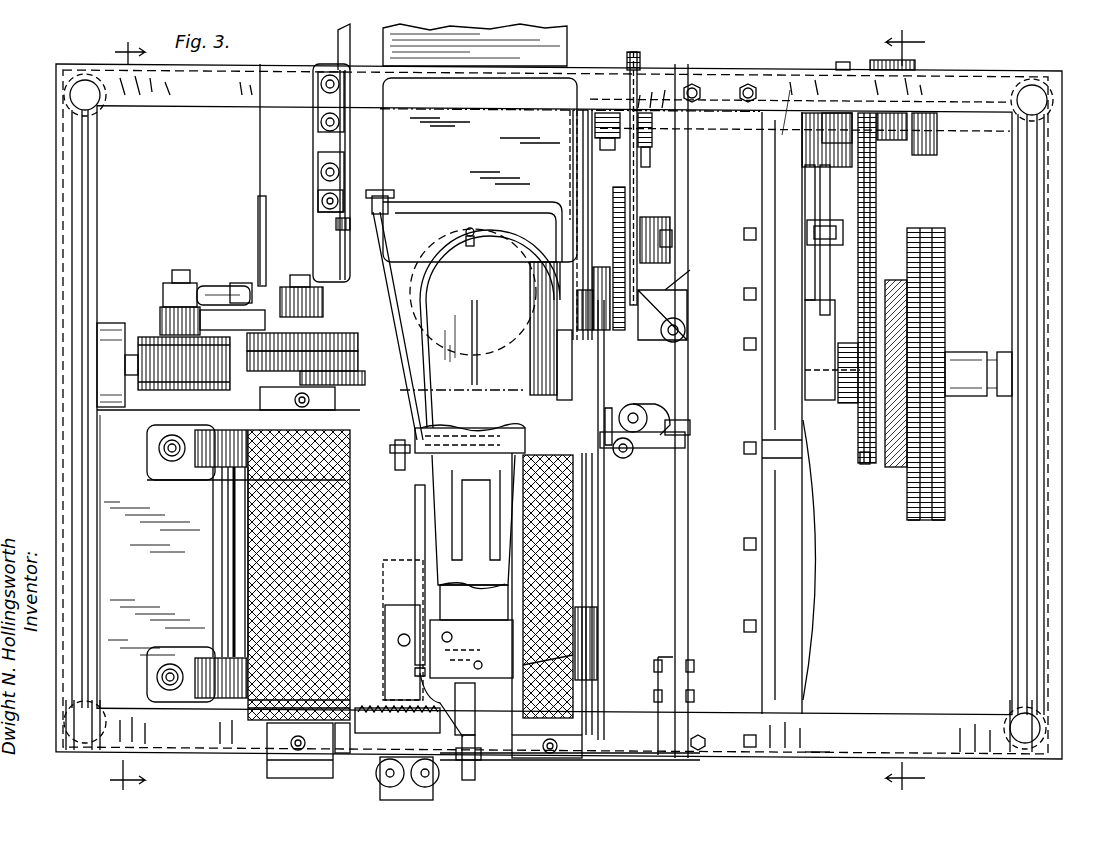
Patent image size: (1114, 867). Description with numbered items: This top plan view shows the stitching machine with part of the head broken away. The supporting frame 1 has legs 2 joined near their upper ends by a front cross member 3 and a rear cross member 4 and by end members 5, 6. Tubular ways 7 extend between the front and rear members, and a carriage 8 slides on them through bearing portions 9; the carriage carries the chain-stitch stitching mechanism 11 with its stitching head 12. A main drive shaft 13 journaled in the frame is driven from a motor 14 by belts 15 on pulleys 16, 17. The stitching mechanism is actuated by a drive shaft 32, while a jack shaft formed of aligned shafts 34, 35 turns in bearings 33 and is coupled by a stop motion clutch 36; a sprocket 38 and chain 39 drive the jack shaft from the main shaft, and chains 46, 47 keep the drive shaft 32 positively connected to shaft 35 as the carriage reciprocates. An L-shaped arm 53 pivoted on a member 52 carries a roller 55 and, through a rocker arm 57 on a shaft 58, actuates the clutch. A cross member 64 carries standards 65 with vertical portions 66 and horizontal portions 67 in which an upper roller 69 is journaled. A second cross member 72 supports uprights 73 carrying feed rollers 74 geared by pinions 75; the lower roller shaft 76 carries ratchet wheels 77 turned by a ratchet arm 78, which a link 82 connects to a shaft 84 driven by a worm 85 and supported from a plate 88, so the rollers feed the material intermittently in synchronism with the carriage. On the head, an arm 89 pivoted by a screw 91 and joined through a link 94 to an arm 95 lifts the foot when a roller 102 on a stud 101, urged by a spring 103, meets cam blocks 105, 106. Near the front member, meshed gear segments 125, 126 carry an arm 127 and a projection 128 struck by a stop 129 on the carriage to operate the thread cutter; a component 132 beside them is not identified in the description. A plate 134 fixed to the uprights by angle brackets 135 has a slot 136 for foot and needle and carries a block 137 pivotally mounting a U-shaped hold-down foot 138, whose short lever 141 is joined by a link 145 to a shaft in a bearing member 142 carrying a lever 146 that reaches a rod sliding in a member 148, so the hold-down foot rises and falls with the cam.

The supporting frame 1 is at (1072, 290).
The legs 2 is at (62, 92).
The front cross member 3 is at (822, 752).
The rear cross member 4 is at (792, 78).
The end member 5 is at (40, 370).
The end member 6 is at (1074, 418).
The tubular ways 7 is at (578, 693).
The carriage 8 is at (500, 758).
The bearing portions 9 is at (218, 620).
The stitching mechanism 11 is at (470, 228).
The stitching head 12 is at (505, 640).
The main drive shaft 13 is at (826, 395).
The motor 14 is at (860, 335).
The belts 15 is at (935, 520).
The pulley 16 is at (945, 268).
The pulley 17 is at (948, 290).
The drive shaft 32 is at (668, 290).
The bearings 33 is at (938, 147).
The shaft 34 is at (893, 140).
The shaft 35 is at (640, 110).
The stop motion mechanism clutch 36 is at (842, 62).
The sprocket 38 is at (865, 462).
The chain 39 is at (878, 183).
The chain 46 is at (637, 180).
The chain 47 is at (613, 190).
The member 52 is at (665, 262).
The L-shaped arm 53 is at (660, 318).
The roller 55 is at (686, 328).
The rocker arm 57 is at (822, 220).
The shaft 58 is at (808, 157).
The cross member 64 is at (762, 630).
The standards 65 is at (578, 460).
The vertical portions 66 is at (590, 478).
The horizontal portions 67 is at (660, 448).
The upper roller 69 is at (594, 530).
The cross member 72 is at (268, 222).
The uprights 73 is at (330, 388).
The feed rollers 74 is at (260, 574).
The pinions 75 is at (350, 355).
The shaft 76 is at (298, 286).
The ratchet wheels 77 is at (350, 335).
The ratchet arm 78 is at (172, 310).
The link 82 is at (215, 287).
The shaft 84 is at (212, 505).
The worm 85 is at (184, 377).
The plate 88 is at (110, 507).
The arm 89 is at (395, 275).
The screw 91 is at (414, 503).
The link 94 is at (402, 636).
The arm 95 is at (398, 642).
The stud 101 is at (380, 225).
The roller 102 is at (318, 182).
The spring 103 is at (385, 200).
The cam block 105 is at (330, 36).
The cam block 106 is at (340, 226).
The gear segment 125 is at (345, 760).
The gear segment 126 is at (432, 790).
The arm 127 is at (250, 713).
The projection 128 is at (473, 730).
The stop 129 is at (560, 660).
The pin 132 is at (475, 775).
The plate 134 is at (394, 618).
The angle brackets 135 is at (465, 360).
The slot 136 is at (474, 602).
The block 137 is at (484, 412).
The U-shaped hold-down foot 138 is at (575, 560).
The short lever 141 is at (400, 462).
The bearing member 142 is at (632, 404).
The link 145 is at (418, 432).
The lever 146 is at (655, 405).
The member 148 is at (665, 425).